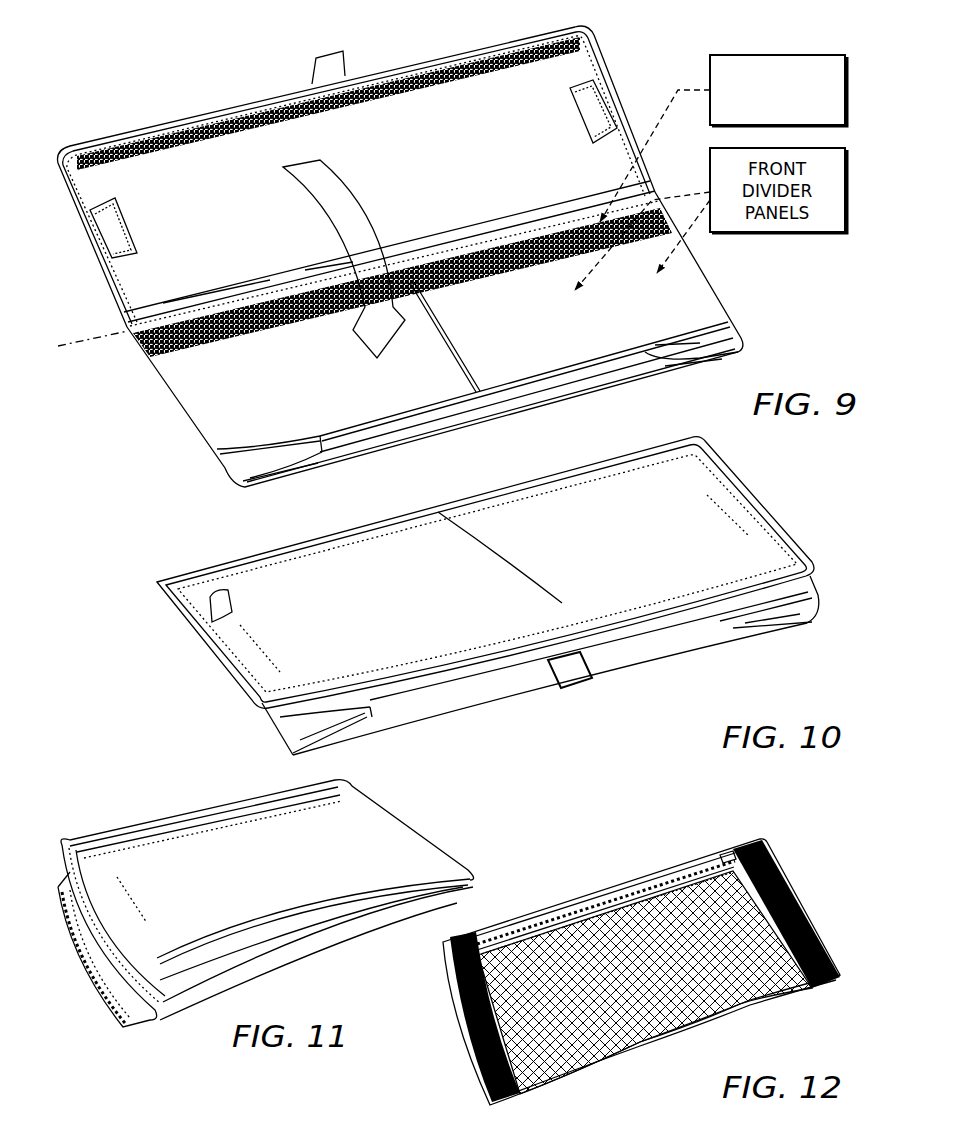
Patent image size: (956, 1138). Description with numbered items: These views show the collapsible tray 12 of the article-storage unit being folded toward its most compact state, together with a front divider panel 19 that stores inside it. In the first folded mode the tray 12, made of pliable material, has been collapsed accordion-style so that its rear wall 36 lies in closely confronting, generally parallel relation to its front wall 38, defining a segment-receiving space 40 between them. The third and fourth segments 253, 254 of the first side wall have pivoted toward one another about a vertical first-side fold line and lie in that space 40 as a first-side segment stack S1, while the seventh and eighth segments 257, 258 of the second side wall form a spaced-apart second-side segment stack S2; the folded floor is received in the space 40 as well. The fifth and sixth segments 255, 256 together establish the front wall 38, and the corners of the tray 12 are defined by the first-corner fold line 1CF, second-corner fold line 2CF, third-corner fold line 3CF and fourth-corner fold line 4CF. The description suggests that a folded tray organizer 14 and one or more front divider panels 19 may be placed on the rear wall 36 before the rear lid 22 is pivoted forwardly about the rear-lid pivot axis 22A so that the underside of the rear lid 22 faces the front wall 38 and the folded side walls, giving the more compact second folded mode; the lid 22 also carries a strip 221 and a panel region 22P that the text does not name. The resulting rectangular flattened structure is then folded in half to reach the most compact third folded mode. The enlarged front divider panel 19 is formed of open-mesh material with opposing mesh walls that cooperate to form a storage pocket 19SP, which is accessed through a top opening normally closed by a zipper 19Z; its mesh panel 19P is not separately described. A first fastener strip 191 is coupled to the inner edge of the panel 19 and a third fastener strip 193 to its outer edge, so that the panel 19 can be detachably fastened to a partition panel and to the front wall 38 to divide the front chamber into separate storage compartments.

In FIG. 9, the tray 12 is at (182, 418).
In FIG. 10, the tray 12 is at (266, 740).
In FIG. 11, the tray 12 is at (137, 822).
In FIG. 9, the tray organizer 14 is at (757, 56).
In FIG. 9, the rear lid 22 is at (150, 116).
In FIG. 10, the rear lid 22 is at (247, 604).
In FIG. 9, the hook-and-loop strip on lid 221 is at (235, 110).
In FIG. 9, the lid panel face 22P is at (508, 90).
In FIG. 9, the rear-lid pivot axis 22A is at (97, 338).
In FIG. 9, the rear wall 36 is at (502, 399).
In FIG. 9, the front wall 38 is at (487, 298).
In FIG. 9, the segment-receiving space 40 is at (418, 416).
In FIG. 10, the segment-receiving space 40 is at (453, 696).
In FIG. 9, the fifth segment 255 is at (587, 332).
In FIG. 9, the sixth segment 256 is at (355, 389).
In FIG. 9, the third segment 253 is at (676, 360).
In FIG. 9, the fourth segment 254 is at (665, 352).
In FIG. 9, the seventh segment 257 is at (300, 443).
In FIG. 9, the eighth segment 258 is at (288, 473).
In FIG. 9, the first-side segment stack S1 is at (641, 362).
In FIG. 10, the first-side segment stack S1 is at (713, 624).
In FIG. 9, the second-side segment stack S2 is at (344, 442).
In FIG. 10, the second-side segment stack S2 is at (382, 716).
In FIG. 9, the first-corner fold line 1CF is at (740, 352).
In FIG. 9, the second-corner fold line 2CF is at (711, 290).
In FIG. 9, the third-corner fold line 3CF is at (232, 483).
In FIG. 9, the fourth-corner fold line 4CF is at (158, 377).
In FIG. 12, the front divider panel 19 is at (777, 853).
In FIG. 12, the first fastener strip 191 is at (457, 1027).
In FIG. 12, the third fastener strip 193 is at (797, 889).
In FIG. 12, the zipper 19Z is at (630, 882).
In FIG. 12, the pocket panel 19P is at (592, 930).
In FIG. 12, the storage pocket 19SP is at (642, 1012).